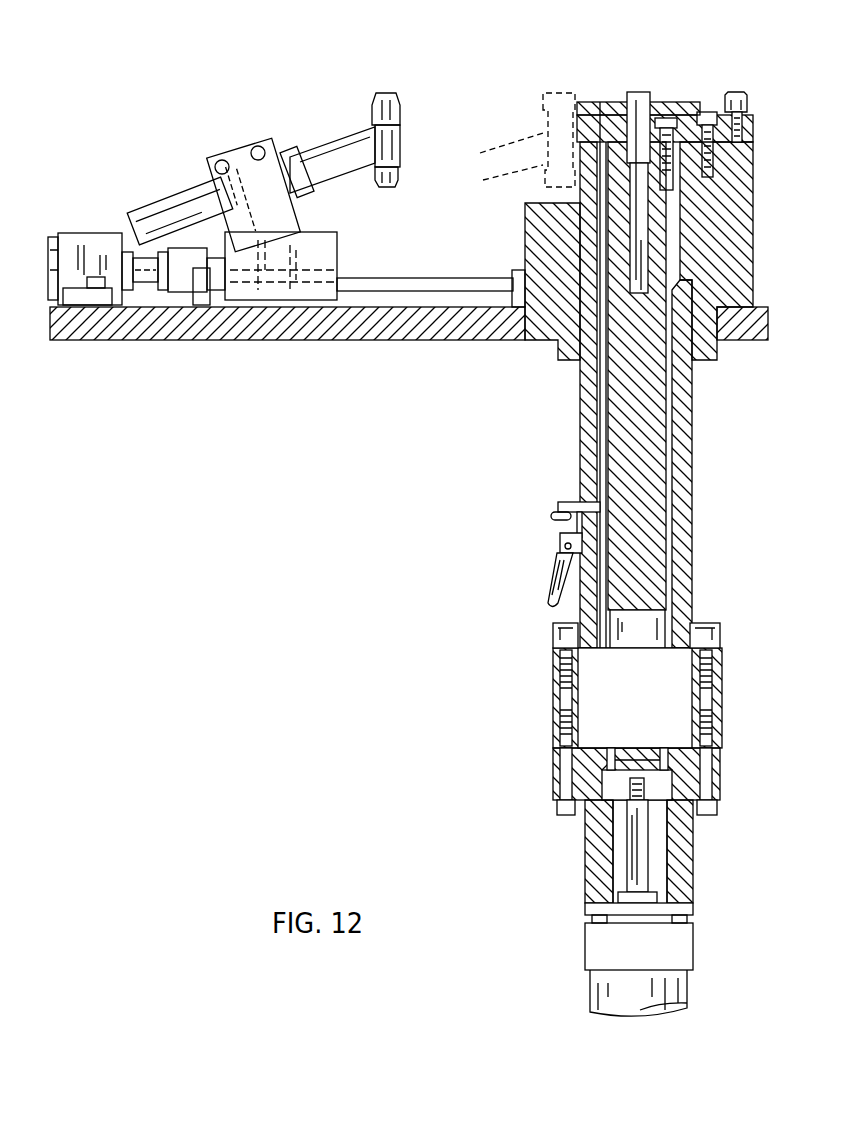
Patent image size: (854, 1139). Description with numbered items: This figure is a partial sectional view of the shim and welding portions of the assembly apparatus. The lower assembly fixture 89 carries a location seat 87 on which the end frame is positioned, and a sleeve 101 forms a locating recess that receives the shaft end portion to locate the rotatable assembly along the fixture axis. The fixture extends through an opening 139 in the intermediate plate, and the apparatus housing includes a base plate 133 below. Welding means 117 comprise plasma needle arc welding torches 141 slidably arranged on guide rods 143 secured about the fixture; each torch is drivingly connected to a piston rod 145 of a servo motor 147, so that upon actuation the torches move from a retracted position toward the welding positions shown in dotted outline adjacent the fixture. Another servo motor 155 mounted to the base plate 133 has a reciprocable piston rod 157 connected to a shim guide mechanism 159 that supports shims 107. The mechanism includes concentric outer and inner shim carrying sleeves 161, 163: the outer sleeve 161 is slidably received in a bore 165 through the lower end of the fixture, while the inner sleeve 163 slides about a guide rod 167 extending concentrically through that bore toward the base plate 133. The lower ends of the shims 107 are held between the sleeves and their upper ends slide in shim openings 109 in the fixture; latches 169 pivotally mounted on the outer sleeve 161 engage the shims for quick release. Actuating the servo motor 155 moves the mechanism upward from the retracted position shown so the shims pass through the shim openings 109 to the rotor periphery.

The location seat 87 is at (738, 91).
The lower assembly fixture 89 is at (693, 60).
The sleeve 101 is at (640, 92).
The shims 107 is at (597, 398).
The shim openings 109 is at (587, 101).
The welding means 117 is at (368, 73).
The base plate 133 is at (75, 330).
The opening 139 is at (718, 340).
The plasma needle arc welding torches 141 is at (400, 100).
The guide rods 143 is at (400, 277).
The piston rod 145 is at (217, 258).
The servo motor 147 is at (53, 236).
The servo motor 155 is at (600, 993).
The piston rod 157 is at (630, 850).
The shim guide mechanism 159 is at (537, 583).
The outer shim carrying sleeve 161 is at (583, 437).
The inner shim carrying sleeve 163 is at (682, 437).
The bore 165 is at (697, 243).
The guide rod 167 is at (650, 415).
The latches 169 is at (558, 505).